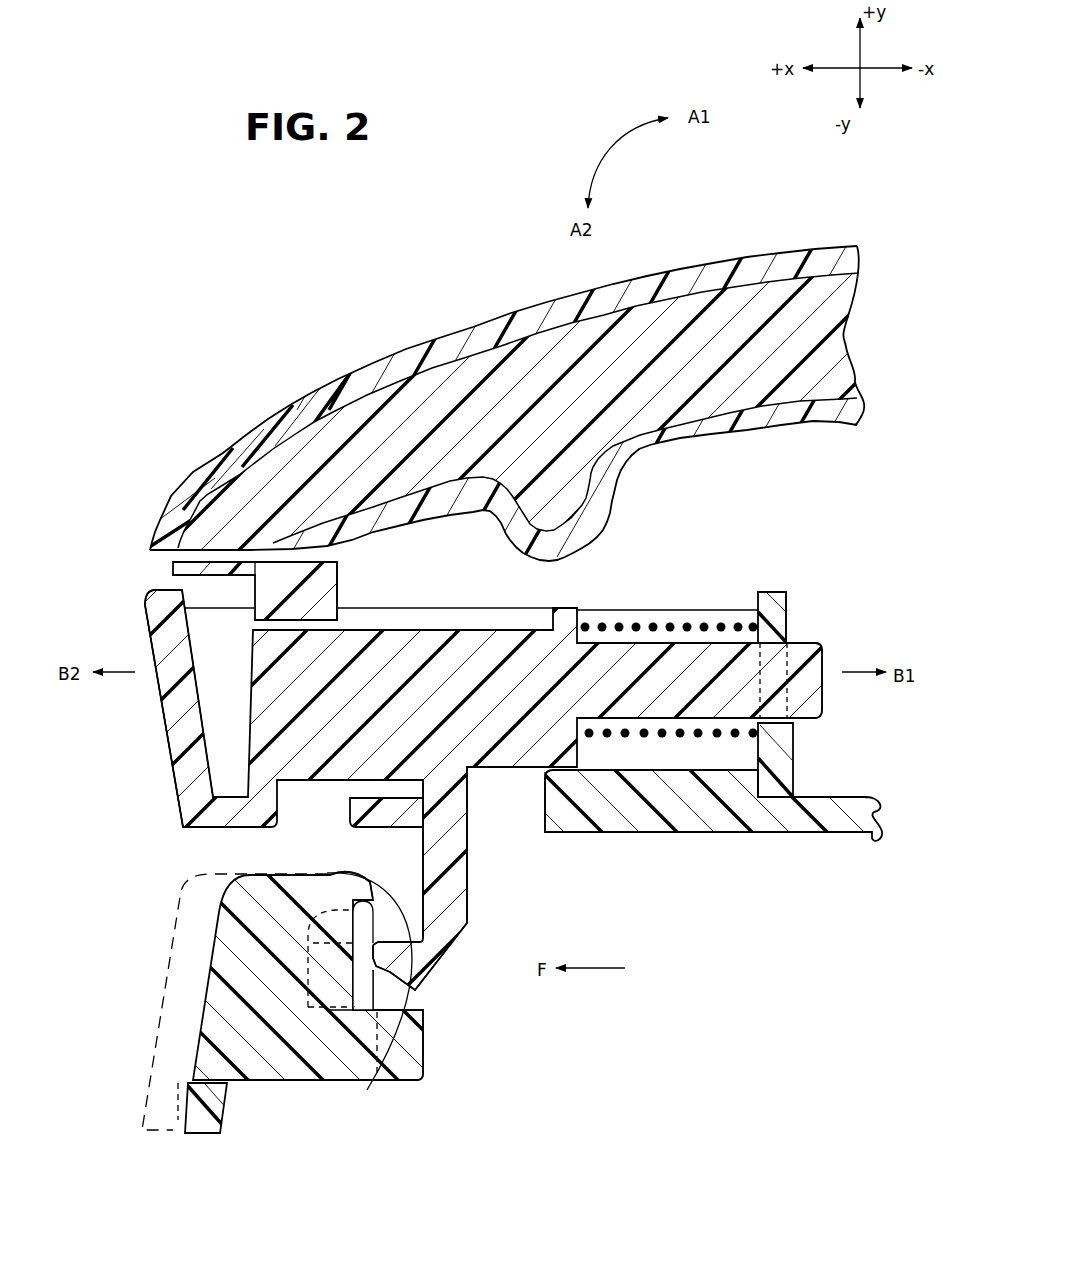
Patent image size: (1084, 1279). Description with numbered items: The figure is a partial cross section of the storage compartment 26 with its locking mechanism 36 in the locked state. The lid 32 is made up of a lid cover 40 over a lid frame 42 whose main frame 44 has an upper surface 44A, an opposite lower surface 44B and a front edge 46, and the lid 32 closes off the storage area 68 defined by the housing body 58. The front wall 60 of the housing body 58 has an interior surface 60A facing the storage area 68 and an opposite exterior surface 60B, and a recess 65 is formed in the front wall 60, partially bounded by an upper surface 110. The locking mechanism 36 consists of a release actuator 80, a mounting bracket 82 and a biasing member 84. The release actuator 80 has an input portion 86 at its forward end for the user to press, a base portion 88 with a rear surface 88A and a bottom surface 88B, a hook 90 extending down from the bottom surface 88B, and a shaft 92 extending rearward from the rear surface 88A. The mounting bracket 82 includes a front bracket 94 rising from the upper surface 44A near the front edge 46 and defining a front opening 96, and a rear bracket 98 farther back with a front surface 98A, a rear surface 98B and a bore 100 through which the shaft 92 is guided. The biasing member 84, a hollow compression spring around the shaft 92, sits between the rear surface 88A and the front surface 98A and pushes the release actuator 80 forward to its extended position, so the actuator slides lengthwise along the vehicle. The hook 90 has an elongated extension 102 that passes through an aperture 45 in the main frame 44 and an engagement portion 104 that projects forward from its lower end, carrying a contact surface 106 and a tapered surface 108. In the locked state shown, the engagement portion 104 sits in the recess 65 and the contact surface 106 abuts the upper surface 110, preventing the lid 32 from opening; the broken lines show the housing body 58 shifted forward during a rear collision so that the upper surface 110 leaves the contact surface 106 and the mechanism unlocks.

The storage compartment 26 is at (217, 207).
The lid 32 is at (355, 330).
The locking mechanism 36 is at (821, 523).
The lid cover 40 is at (730, 243).
The lid frame 42 is at (930, 653).
The main frame 44 is at (870, 800).
The upper surface 44A is at (838, 797).
The lower surface 44B is at (882, 836).
The aperture 45 is at (483, 808).
The front edge 46 is at (348, 822).
The housing body 58 is at (405, 1085).
The front wall 60 is at (185, 1120).
The interior surface 60A is at (423, 1040).
The exterior surface 60B is at (185, 1098).
The recess 65 is at (408, 1000).
The storage area 68 is at (882, 1030).
The release actuator 80 is at (126, 640).
The mounting bracket 82 is at (168, 567).
The biasing member 84 is at (708, 625).
The input portion 86 is at (178, 713).
The base portion 88 is at (430, 645).
The rear surface 88A is at (575, 612).
The bottom surface 88B is at (515, 768).
The hook 90 is at (476, 898).
The shaft 92 is at (627, 660).
The front bracket 94 is at (268, 574).
The front opening 96 is at (340, 612).
The rear bracket 98 is at (795, 748).
The front surface 98A is at (752, 605).
The rear surface 98B is at (790, 612).
The bore 100 is at (795, 640).
The elongated extension 102 is at (470, 862).
The engagement portion 104 is at (430, 975).
The contact surface 106 is at (365, 868).
The tapered surface 108 is at (367, 1090).
The upper surface 110 is at (370, 902).